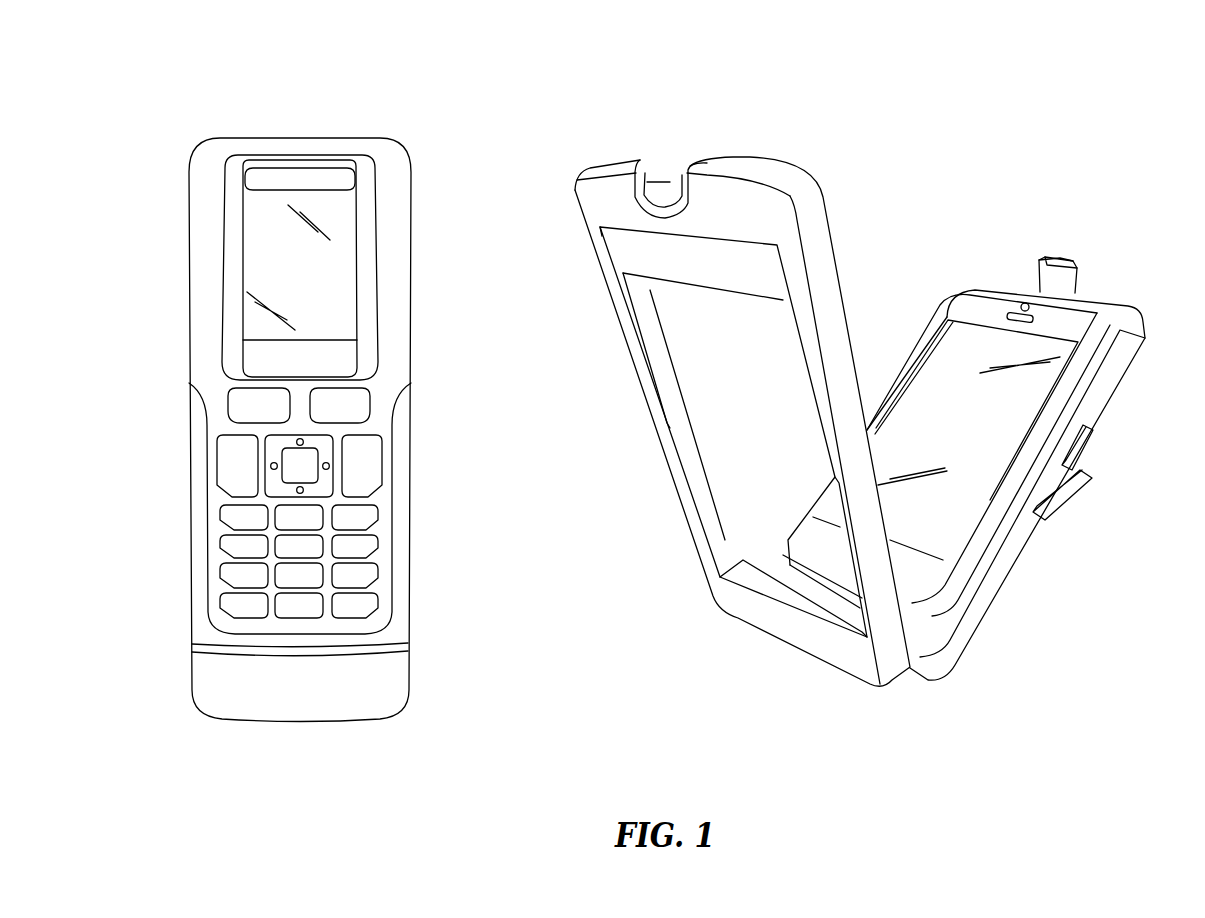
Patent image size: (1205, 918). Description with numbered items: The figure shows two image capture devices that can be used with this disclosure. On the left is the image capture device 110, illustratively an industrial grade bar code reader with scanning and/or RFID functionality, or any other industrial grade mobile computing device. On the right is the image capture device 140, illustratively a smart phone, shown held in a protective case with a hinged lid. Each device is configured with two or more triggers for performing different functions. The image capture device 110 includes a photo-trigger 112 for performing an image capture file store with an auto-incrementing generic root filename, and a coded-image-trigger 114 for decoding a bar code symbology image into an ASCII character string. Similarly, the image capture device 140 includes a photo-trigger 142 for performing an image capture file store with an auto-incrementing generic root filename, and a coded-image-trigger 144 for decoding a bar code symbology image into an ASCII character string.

The image capture device 110 is at (289, 131).
The photo-trigger 112 is at (240, 462).
The coded-image-trigger 114 is at (366, 458).
The image capture device 140 is at (815, 195).
The photo-trigger 142 is at (935, 518).
The coded-image-trigger 144 is at (1090, 448).